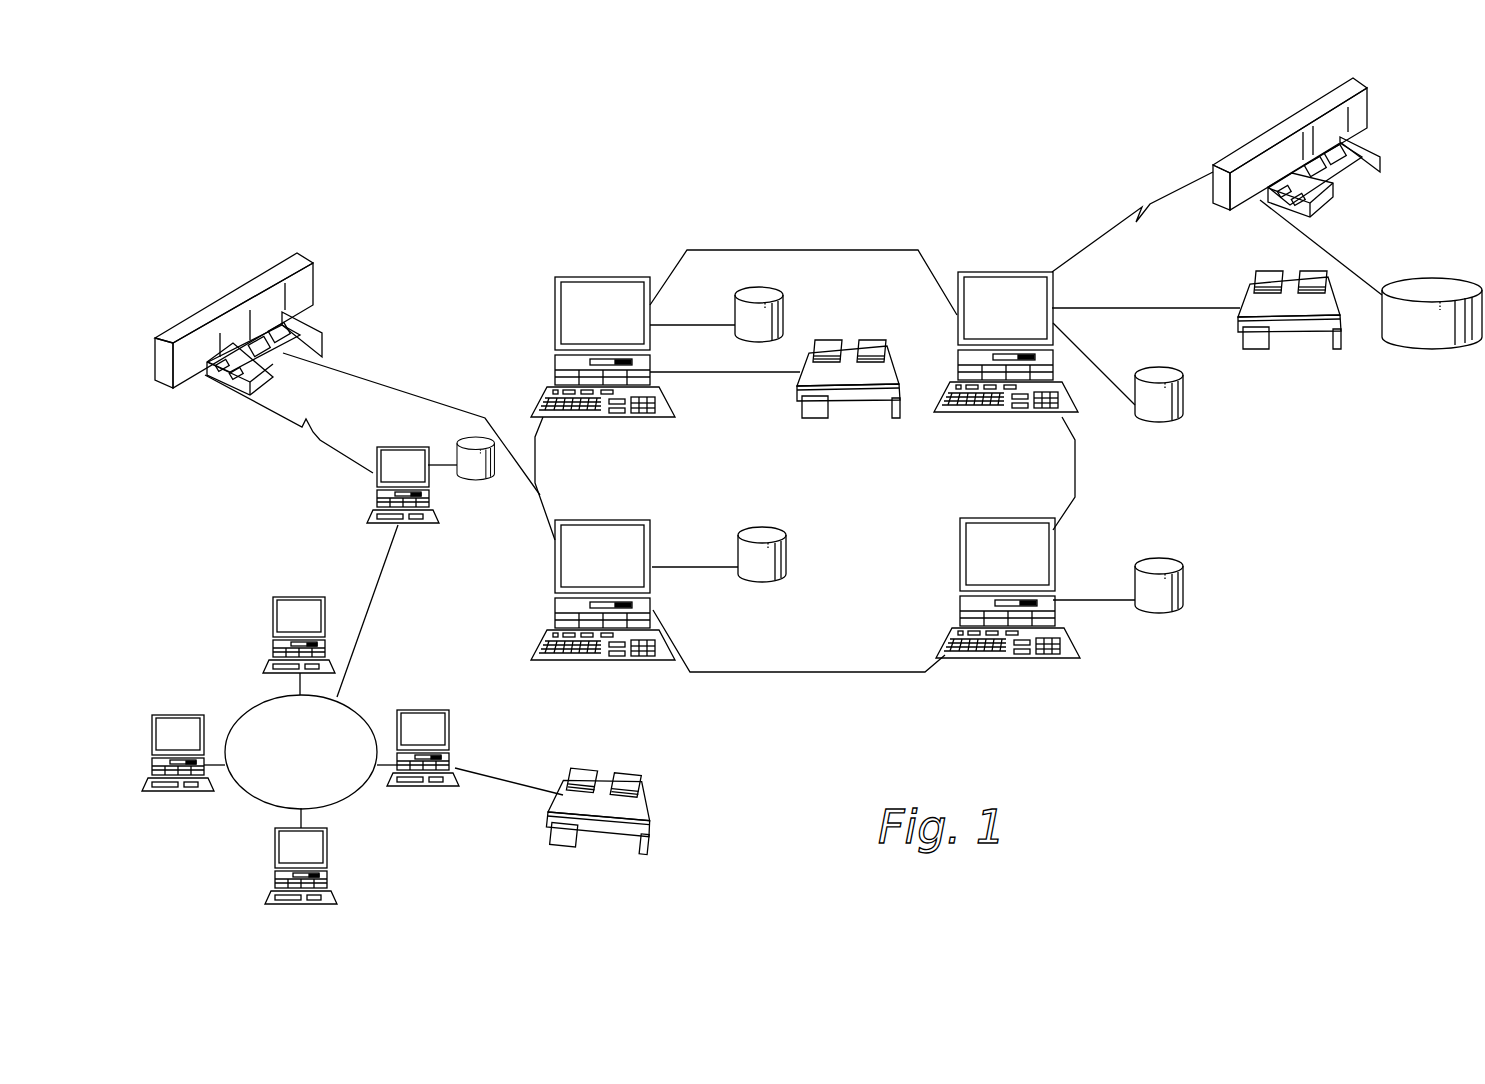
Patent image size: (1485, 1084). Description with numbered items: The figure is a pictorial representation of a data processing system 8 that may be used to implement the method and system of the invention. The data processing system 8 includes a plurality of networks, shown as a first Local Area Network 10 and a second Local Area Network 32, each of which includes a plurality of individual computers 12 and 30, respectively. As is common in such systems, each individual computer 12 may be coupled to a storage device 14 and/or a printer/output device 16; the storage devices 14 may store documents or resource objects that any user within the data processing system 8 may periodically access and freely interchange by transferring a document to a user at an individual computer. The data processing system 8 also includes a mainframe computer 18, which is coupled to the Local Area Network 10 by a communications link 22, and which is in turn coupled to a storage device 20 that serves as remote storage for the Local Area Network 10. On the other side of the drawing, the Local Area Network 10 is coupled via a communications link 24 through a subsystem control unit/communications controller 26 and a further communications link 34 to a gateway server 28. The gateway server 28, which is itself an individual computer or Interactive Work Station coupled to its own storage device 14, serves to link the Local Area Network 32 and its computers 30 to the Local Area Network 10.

The data processing system 8 is at (836, 200).
The Local Area Network 10 is at (833, 673).
The individual computer 12 is at (620, 275).
The storage device 14 is at (782, 300).
The printer/output device 16 is at (848, 353).
The mainframe computer 18 is at (1292, 117).
The storage device 20 is at (1453, 282).
The communications link 22 is at (1172, 203).
The communications link 24 is at (408, 392).
The subsystem control unit/communications controller 26 is at (310, 263).
The gateway server 28 is at (402, 447).
The individual computer 30 is at (312, 597).
The Local Area Network 32 is at (250, 800).
The communications link 34 is at (310, 440).